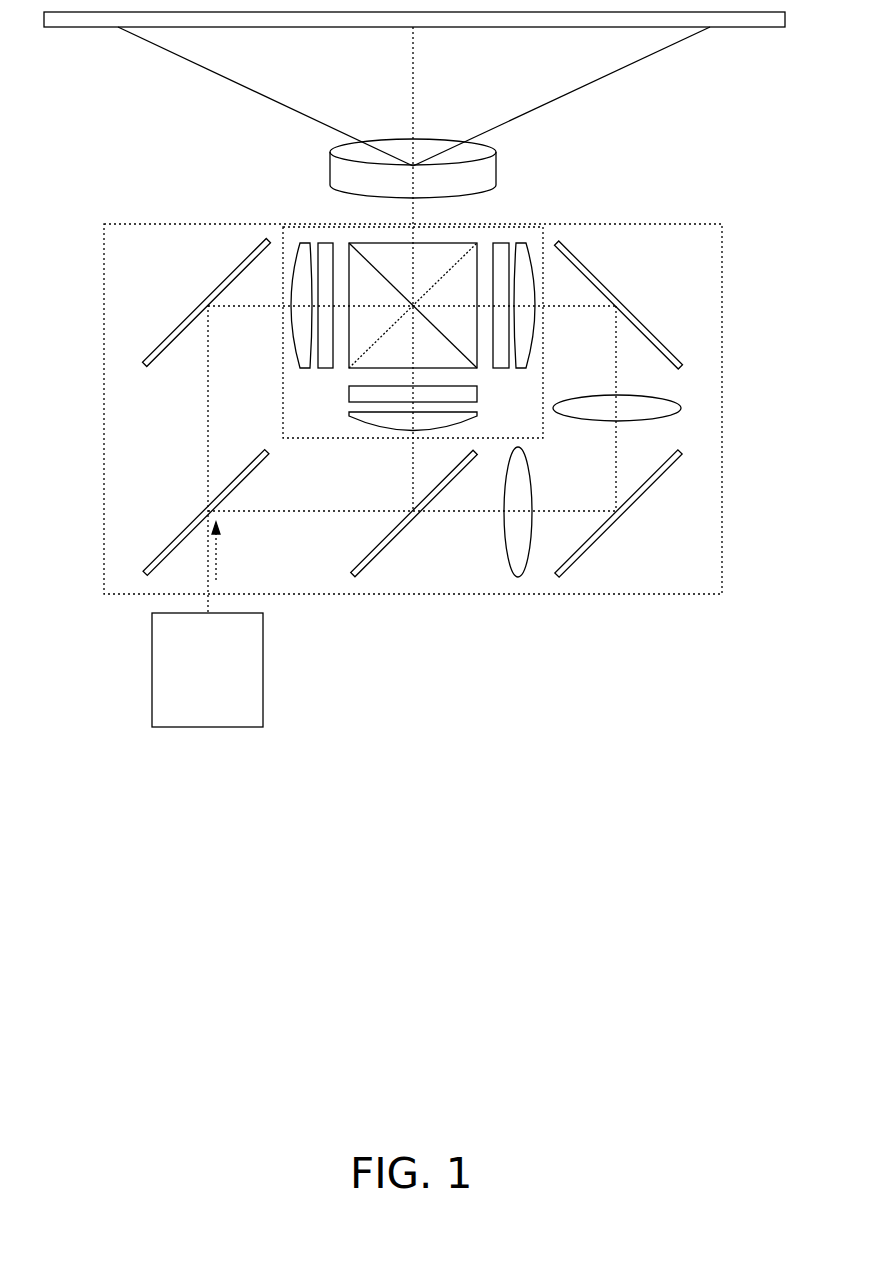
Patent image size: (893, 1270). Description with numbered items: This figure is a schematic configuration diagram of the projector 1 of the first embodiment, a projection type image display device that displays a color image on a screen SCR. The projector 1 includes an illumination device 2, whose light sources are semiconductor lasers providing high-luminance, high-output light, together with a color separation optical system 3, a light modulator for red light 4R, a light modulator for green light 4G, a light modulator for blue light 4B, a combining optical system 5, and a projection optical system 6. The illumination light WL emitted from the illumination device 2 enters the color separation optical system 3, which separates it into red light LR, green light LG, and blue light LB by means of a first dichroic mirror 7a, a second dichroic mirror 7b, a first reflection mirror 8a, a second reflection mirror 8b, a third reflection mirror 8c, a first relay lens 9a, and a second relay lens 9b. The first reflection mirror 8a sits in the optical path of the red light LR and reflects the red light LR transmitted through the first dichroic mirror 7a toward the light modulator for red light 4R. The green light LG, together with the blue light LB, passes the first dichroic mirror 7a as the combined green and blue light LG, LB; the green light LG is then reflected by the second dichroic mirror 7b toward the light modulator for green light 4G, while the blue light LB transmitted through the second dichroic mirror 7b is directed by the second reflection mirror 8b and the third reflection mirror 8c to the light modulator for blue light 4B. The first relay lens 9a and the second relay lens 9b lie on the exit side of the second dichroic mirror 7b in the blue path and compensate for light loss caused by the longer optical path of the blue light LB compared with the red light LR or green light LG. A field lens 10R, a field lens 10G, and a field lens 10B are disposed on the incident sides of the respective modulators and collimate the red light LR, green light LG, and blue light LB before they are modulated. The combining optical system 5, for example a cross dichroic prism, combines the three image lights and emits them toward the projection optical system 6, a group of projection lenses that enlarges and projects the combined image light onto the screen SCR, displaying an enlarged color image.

The projector 1 is at (732, 200).
The illumination device 2 is at (263, 668).
The color separation optical system 3 is at (104, 357).
The light modulator for red light 4R is at (325, 243).
The light modulator for green light 4G is at (349, 395).
The light modulator for blue light 4B is at (501, 243).
The combining optical system 5 is at (434, 250).
The projection optical system 6 is at (400, 146).
The first dichroic mirror 7a is at (176, 540).
The second dichroic mirror 7b is at (393, 543).
The first reflection mirror 8a is at (185, 322).
The second reflection mirror 8b is at (640, 500).
The third reflection mirror 8c is at (645, 322).
The first relay lens 9a is at (505, 530).
The second relay lens 9b is at (668, 403).
The field lens 10R is at (300, 243).
The field lens 10G is at (349, 424).
The field lens 10B is at (526, 243).
The screen SCR is at (753, 27).
The illumination light WL is at (218, 560).
The red light LR is at (208, 428).
The green light LG is at (413, 470).
The blue light LB is at (616, 463).
The green and blue light LG, LB is at (272, 512).